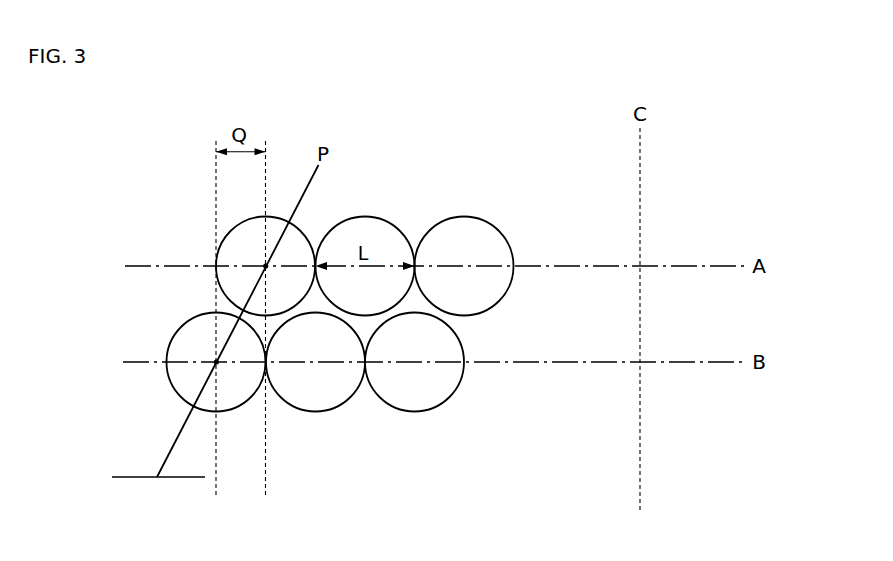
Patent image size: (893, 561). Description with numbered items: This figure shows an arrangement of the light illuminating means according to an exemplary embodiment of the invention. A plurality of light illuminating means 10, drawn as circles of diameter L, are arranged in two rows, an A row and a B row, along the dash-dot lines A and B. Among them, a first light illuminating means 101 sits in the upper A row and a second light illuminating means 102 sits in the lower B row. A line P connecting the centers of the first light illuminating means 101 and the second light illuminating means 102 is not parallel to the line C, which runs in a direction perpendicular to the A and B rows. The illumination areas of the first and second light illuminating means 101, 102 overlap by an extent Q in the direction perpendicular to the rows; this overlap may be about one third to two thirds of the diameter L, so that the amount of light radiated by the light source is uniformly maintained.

The light illuminating means 10 is at (478, 295).
The first light illuminating means 101 is at (237, 245).
The second light illuminating means 102 is at (185, 332).